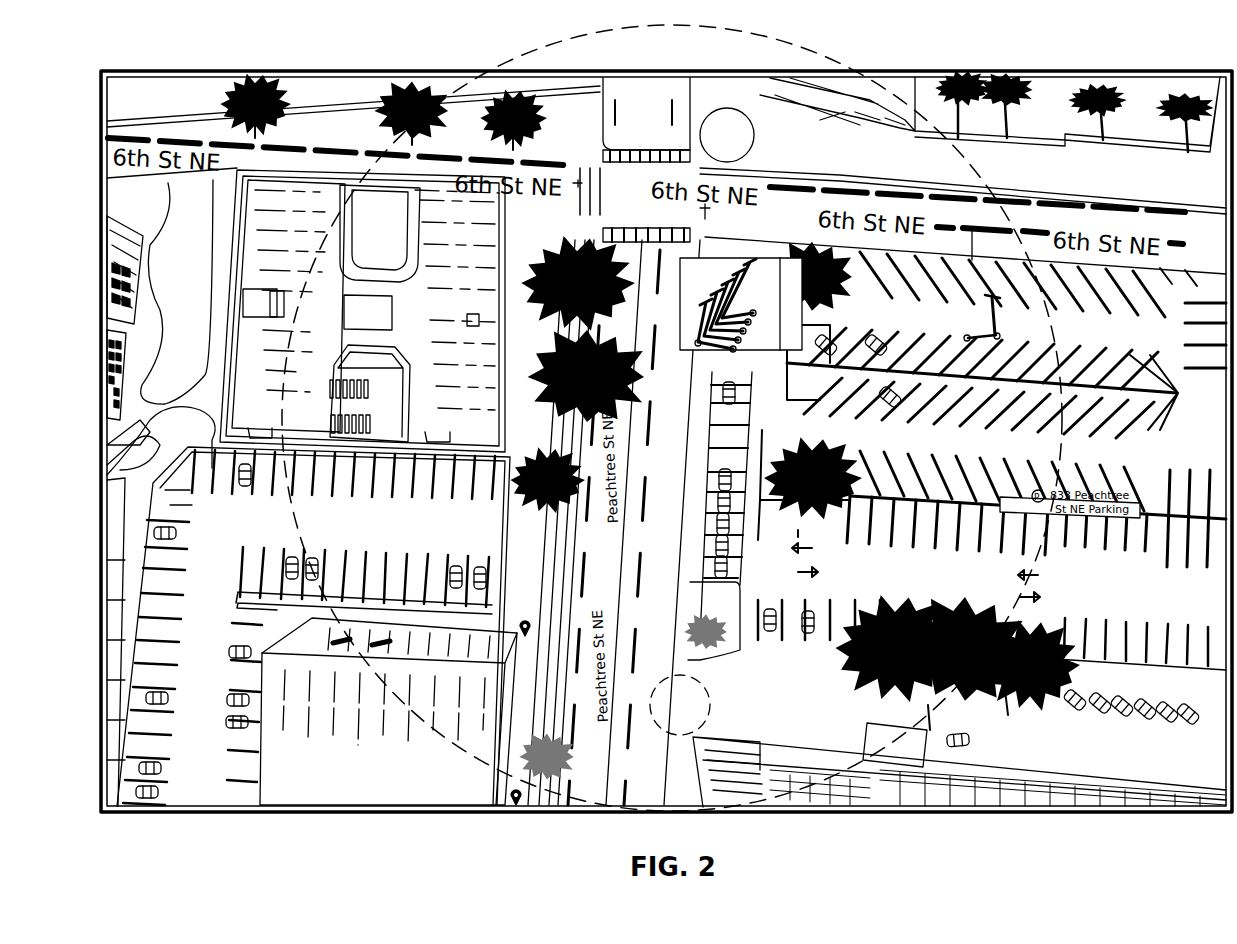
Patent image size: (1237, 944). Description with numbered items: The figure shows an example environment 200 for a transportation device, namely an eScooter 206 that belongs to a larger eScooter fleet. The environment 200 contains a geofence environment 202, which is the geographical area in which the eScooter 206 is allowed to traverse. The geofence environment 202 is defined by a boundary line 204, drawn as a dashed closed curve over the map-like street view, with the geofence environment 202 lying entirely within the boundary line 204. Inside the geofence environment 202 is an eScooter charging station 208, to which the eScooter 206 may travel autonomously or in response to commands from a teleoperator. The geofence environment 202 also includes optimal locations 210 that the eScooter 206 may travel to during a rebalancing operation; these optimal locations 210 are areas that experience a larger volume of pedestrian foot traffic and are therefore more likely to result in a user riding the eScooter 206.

The environment 200 is at (188, 60).
The geofence environment 202 is at (540, 357).
The boundary line 204 is at (835, 64).
The eScooter 206 is at (1017, 316).
The eScooter charging station 208 is at (692, 264).
The optimal location 210 is at (735, 132).